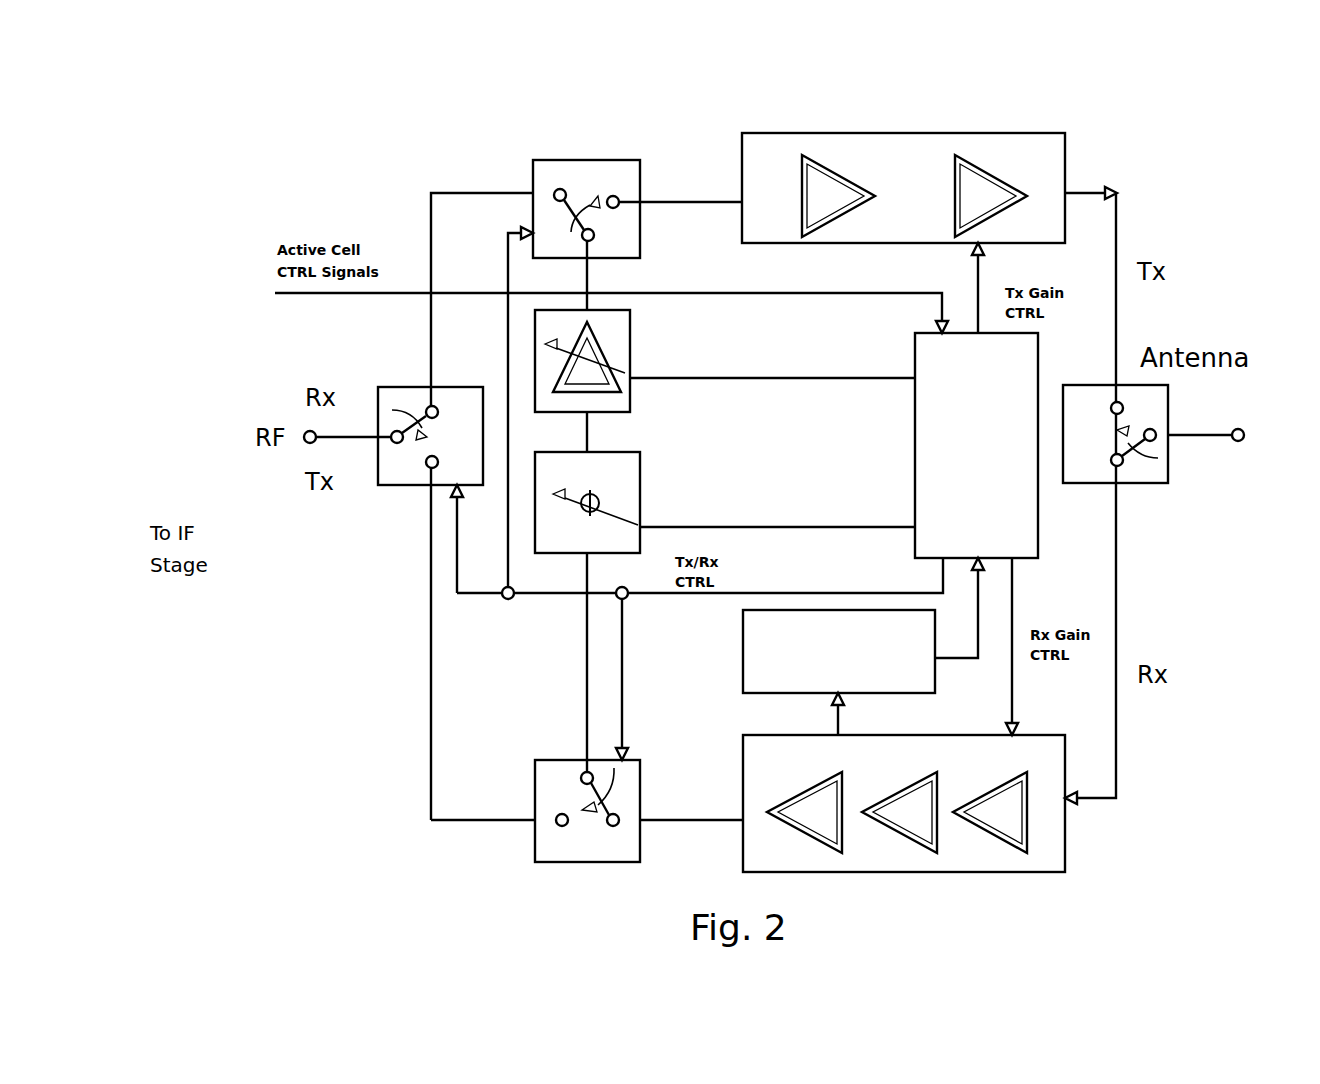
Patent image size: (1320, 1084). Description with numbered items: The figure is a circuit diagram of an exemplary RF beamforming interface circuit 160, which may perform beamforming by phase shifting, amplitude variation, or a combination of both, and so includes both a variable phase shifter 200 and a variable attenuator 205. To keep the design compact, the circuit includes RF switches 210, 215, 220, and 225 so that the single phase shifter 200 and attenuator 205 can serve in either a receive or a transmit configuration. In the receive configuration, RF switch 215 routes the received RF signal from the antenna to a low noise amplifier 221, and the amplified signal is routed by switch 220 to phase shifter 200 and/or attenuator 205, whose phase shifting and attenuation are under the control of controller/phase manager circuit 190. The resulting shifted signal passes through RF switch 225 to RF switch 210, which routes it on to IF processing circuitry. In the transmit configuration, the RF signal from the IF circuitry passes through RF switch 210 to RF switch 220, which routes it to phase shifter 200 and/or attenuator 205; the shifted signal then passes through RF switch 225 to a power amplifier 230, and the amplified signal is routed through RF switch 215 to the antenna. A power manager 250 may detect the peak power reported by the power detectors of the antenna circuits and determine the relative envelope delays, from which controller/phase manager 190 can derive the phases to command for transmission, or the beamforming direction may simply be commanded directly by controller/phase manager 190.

The RF beamforming interface circuit 160 is at (1155, 133).
The controller/phase manager circuit 190 is at (908, 495).
The variable phase shifter 200 is at (645, 475).
The variable attenuator 205 is at (635, 372).
The RF switch 210 is at (402, 487).
The RF switch 215 is at (1145, 485).
The RF switch 220 is at (533, 840).
The low noise amplifier 221 is at (1065, 857).
The RF switch 225 is at (565, 160).
The power amplifier 230 is at (930, 133).
The power manager 250 is at (733, 652).